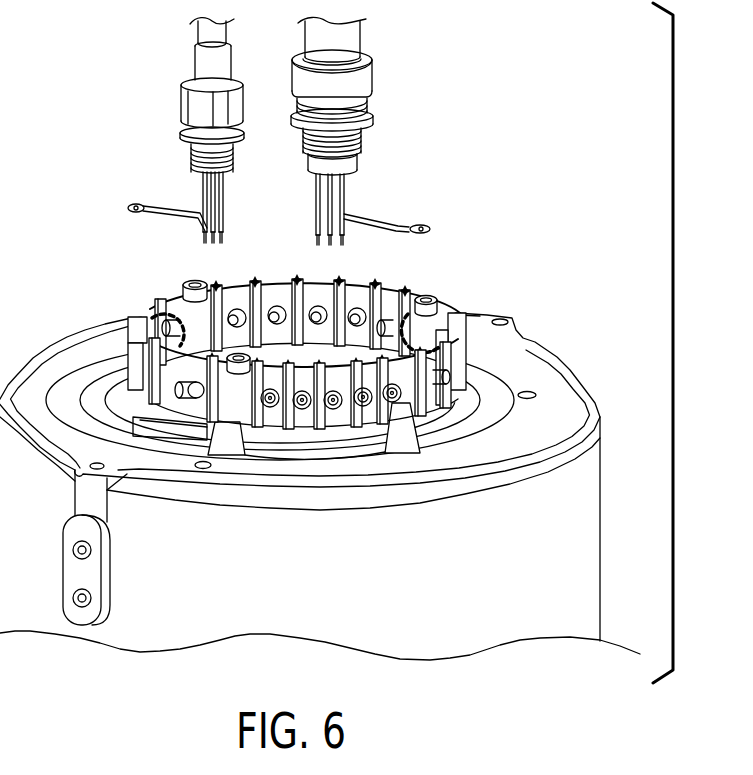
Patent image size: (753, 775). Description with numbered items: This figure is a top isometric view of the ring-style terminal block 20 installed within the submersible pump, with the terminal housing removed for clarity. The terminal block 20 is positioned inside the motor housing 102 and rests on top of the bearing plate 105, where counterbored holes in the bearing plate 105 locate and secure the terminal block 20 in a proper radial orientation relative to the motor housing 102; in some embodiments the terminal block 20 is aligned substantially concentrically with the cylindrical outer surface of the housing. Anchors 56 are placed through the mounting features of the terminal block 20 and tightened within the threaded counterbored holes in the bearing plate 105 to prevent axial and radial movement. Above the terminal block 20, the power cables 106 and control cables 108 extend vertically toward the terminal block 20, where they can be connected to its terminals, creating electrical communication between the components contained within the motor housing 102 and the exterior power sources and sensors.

The ring-style terminal block 20 is at (142, 298).
The anchors 56 is at (195, 280).
The motor housing 102 is at (606, 531).
The bearing plate 105 is at (519, 372).
The power cables 106 is at (386, 79).
The control cables 108 is at (181, 74).